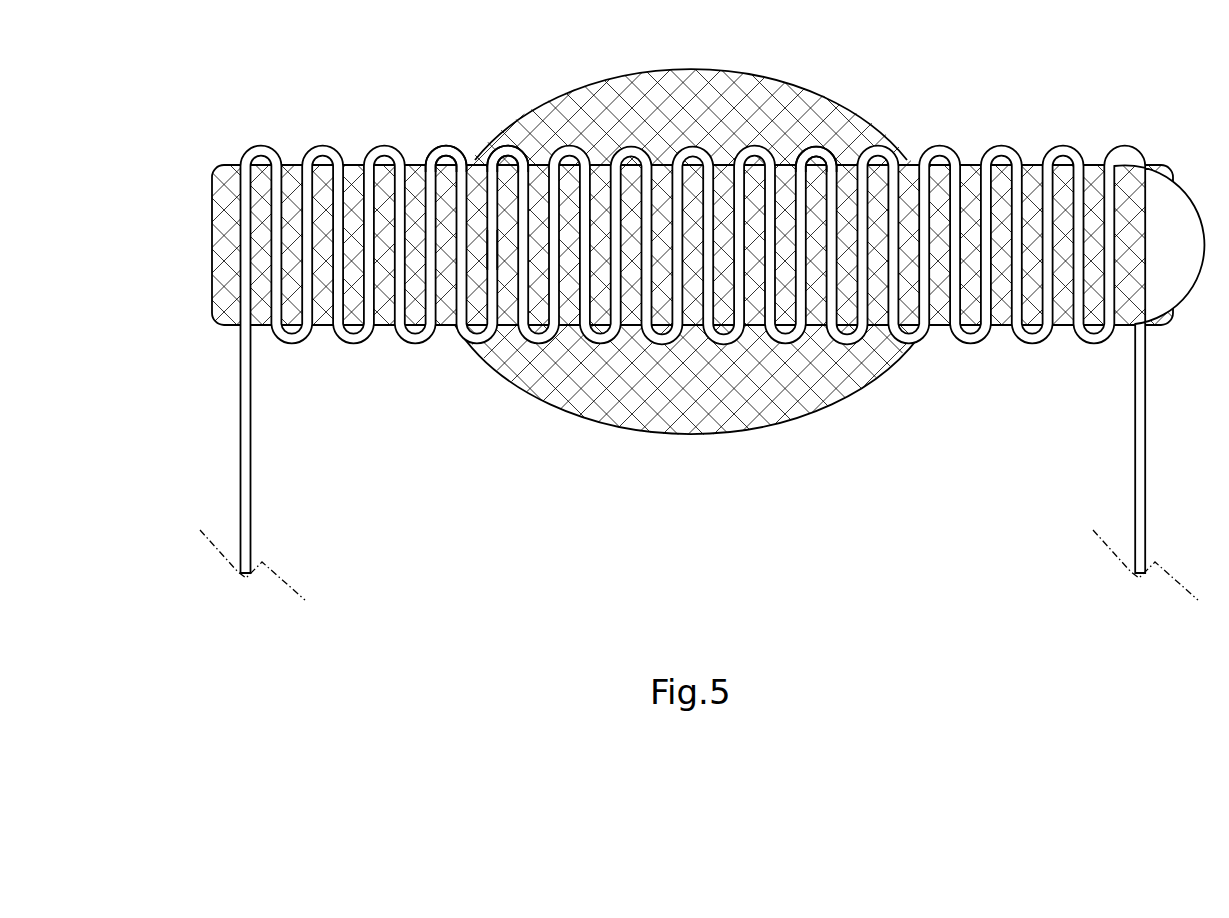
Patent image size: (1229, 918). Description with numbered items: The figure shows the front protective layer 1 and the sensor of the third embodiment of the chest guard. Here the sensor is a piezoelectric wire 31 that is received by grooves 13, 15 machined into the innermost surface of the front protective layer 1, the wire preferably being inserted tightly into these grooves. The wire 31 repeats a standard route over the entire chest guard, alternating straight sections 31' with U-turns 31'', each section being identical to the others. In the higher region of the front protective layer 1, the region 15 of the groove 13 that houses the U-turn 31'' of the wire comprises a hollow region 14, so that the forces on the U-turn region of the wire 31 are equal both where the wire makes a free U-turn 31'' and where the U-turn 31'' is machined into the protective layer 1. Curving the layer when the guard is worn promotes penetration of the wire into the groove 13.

The front protective layer 1 is at (614, 312).
The groove 13 is at (363, 182).
The hollow region 14 is at (828, 150).
The region of the groove 15 is at (817, 160).
The piezoelectric wire 31 is at (679, 373).
The straight section 31' is at (418, 323).
The U-turn 31'' is at (451, 98).